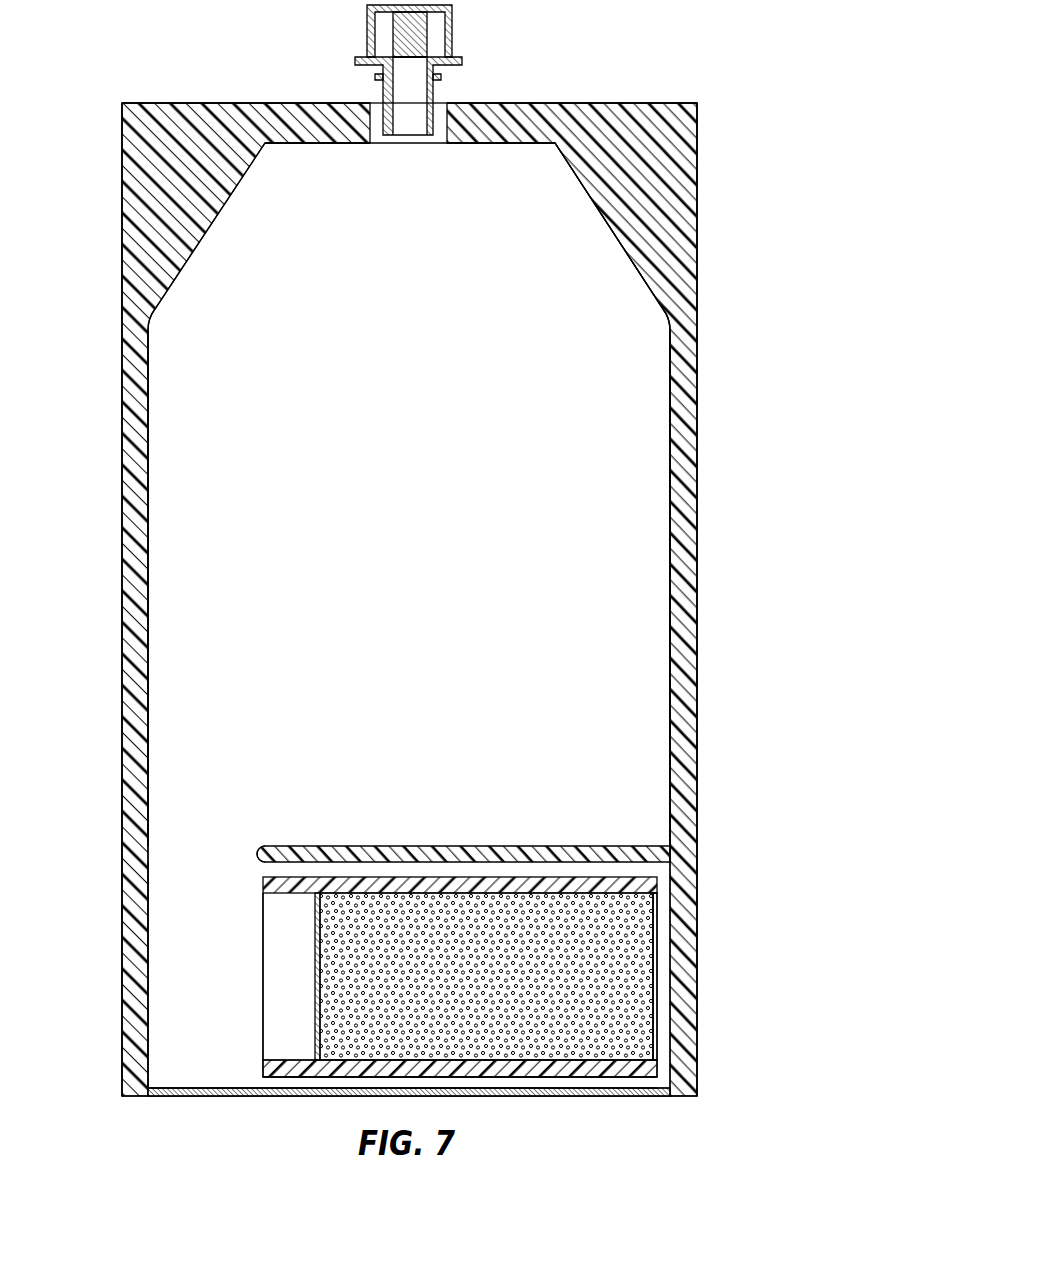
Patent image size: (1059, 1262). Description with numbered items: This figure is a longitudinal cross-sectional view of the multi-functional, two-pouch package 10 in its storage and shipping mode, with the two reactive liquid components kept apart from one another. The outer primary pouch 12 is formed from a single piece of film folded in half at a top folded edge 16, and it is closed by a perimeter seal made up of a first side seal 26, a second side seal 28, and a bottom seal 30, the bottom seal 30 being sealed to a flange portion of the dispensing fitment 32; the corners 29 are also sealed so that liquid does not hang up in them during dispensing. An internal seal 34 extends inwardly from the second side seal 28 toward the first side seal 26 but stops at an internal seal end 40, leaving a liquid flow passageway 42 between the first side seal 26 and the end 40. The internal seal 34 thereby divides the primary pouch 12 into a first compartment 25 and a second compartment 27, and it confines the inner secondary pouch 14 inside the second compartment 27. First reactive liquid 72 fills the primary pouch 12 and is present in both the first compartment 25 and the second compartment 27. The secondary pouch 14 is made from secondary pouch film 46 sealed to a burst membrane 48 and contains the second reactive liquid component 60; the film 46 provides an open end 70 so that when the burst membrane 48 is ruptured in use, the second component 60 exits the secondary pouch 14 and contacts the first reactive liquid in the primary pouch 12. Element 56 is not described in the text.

The package 10 is at (703, 44).
The primary pouch 12 is at (697, 243).
The secondary pouch 14 is at (655, 880).
The top folded edge 16 is at (250, 1095).
The first compartment 25 is at (180, 675).
The first side seal 26 is at (137, 575).
The second compartment 27 is at (525, 1084).
The second side seal 28 is at (697, 595).
The corners 29 is at (132, 138).
The bottom seal 30 is at (270, 115).
The dispensing fitment 32 is at (433, 90).
The internal seal 34 is at (625, 850).
The internal seal end 40 is at (258, 850).
The liquid flow passageway 42 is at (200, 850).
The secondary pouch film 46 is at (648, 1078).
The burst membrane 48 is at (316, 1037).
The bottom plate of filter housing 56 is at (590, 1077).
The second reactive liquid component 60 is at (636, 990).
The open end 70 is at (258, 1030).
The first reactive liquid 72 is at (652, 403).